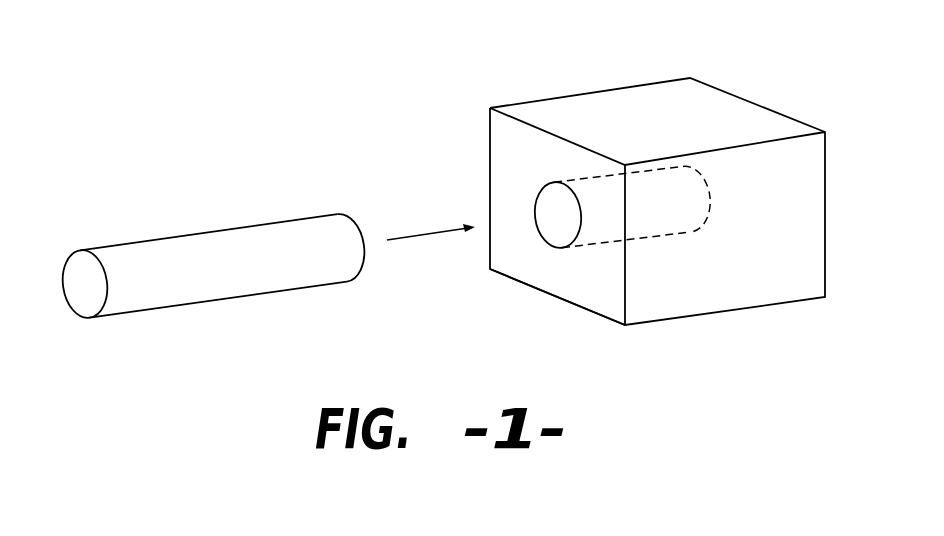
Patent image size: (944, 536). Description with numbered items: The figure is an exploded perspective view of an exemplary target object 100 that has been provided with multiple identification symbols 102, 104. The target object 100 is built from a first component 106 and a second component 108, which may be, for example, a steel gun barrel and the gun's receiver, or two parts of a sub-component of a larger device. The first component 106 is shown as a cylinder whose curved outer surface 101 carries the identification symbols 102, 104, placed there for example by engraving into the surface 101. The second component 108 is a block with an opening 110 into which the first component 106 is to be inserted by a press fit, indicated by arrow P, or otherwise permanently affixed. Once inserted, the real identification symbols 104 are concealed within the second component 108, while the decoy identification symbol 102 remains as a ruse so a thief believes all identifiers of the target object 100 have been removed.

The target object 100 is at (434, 186).
The curved outer surface 101 is at (213, 283).
The decoy identification symbol 102 is at (152, 273).
The identification symbols 104 is at (300, 270).
The first component 106 is at (84, 283).
The second component 108 is at (651, 193).
The opening 110 is at (567, 213).